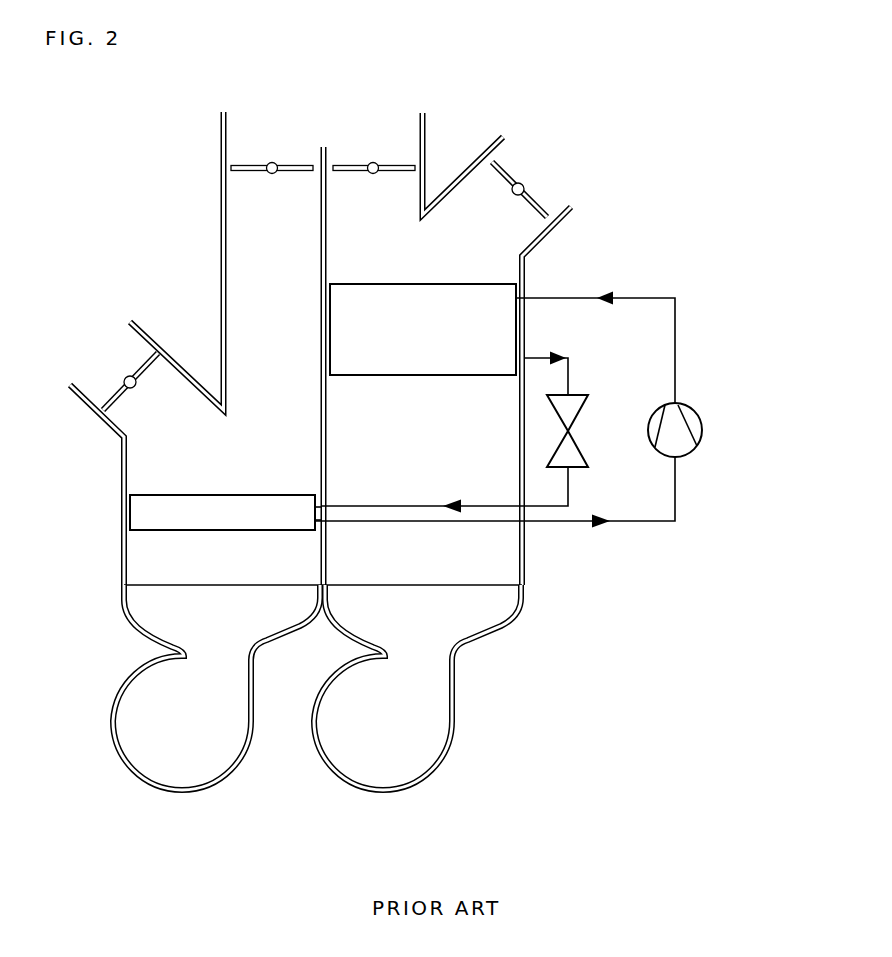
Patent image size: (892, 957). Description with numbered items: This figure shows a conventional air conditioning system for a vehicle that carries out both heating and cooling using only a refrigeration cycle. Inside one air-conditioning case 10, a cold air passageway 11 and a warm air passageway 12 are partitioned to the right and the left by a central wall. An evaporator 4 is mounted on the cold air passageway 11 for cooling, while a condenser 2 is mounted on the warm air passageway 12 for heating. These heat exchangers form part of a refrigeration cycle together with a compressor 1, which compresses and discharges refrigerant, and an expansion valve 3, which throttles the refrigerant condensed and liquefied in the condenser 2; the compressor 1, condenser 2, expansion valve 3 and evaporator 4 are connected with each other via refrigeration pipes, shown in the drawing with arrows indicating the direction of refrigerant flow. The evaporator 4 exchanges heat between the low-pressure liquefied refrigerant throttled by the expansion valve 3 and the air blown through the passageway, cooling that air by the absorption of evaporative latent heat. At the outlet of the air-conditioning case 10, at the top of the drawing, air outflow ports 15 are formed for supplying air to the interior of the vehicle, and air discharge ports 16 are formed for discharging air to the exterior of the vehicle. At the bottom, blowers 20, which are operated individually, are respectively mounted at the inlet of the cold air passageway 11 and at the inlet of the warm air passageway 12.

The compressor 1 is at (703, 431).
The condenser 2 is at (485, 293).
The expansion valve 3 is at (580, 413).
The evaporator 4 is at (157, 522).
The air-conditioning case 10 is at (537, 571).
The cold air passageway 11 is at (197, 478).
The warm air passageway 12 is at (440, 455).
The air outflow ports 15 is at (271, 148).
The air discharge ports 16 is at (537, 177).
The blowers 20 is at (186, 793).